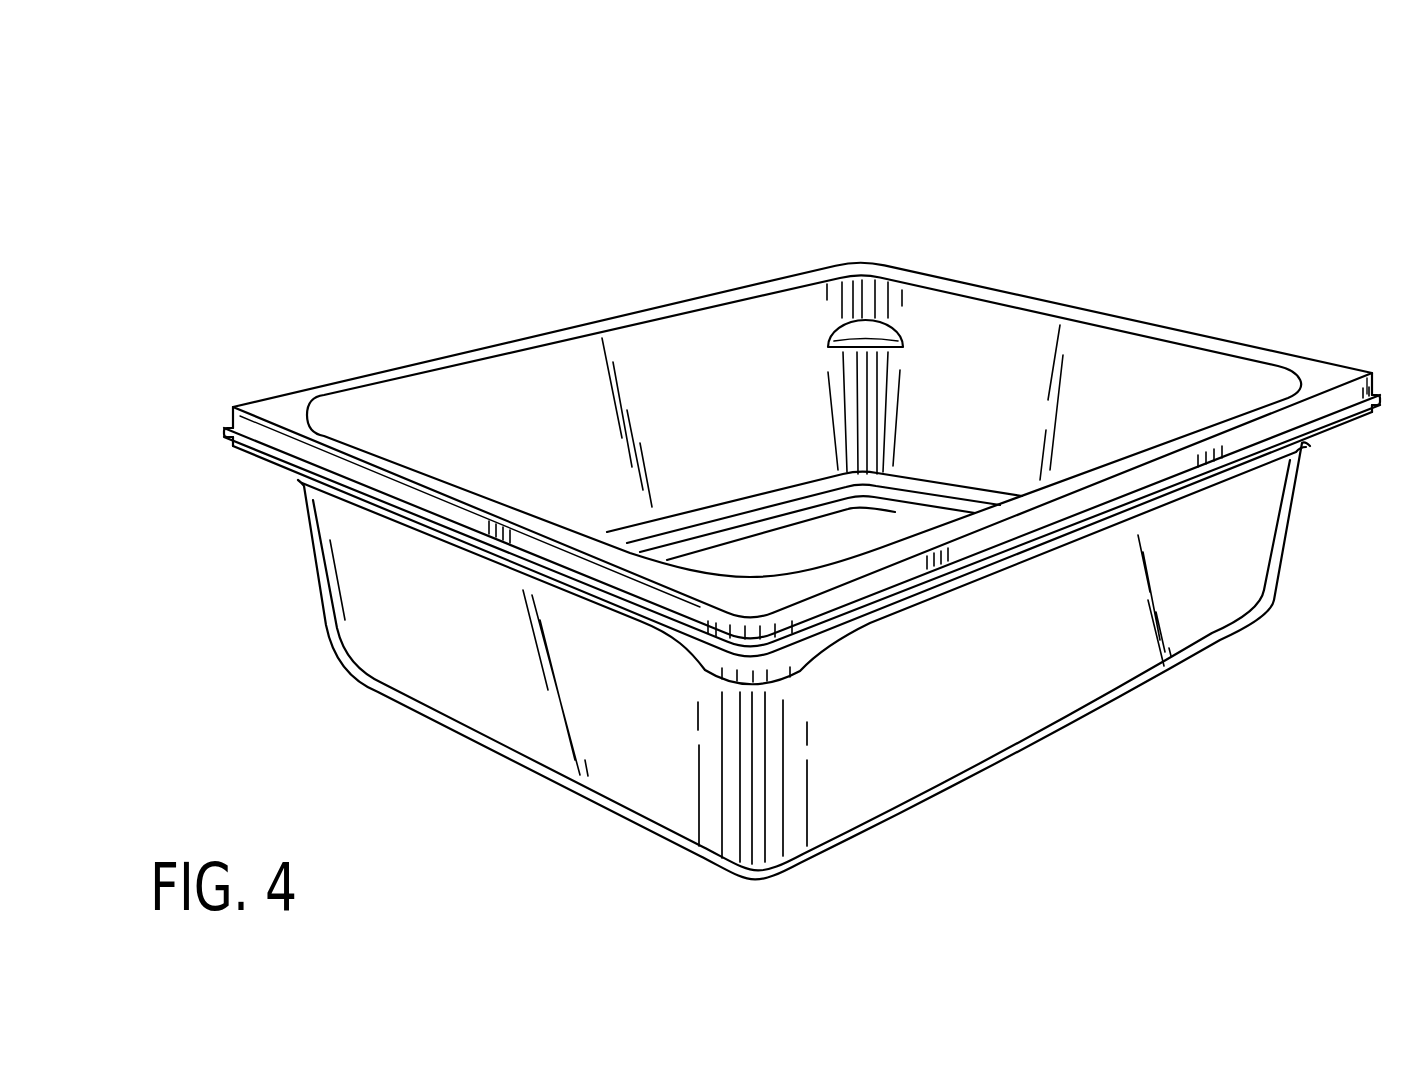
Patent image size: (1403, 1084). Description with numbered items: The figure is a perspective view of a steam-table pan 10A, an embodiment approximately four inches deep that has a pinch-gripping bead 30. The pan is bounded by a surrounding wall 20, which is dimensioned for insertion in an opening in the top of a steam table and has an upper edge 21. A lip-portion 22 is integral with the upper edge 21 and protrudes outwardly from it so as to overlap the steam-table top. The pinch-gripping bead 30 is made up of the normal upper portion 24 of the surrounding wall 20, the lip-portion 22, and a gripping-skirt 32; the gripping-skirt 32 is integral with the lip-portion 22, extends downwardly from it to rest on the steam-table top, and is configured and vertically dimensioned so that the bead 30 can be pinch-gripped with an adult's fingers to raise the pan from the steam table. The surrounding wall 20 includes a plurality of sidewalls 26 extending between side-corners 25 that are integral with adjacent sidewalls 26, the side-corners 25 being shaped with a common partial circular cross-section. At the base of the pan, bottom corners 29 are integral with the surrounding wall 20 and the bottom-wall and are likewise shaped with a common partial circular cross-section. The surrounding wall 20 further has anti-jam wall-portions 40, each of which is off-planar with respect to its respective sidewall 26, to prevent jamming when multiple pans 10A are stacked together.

The steam-table pan 10A is at (1280, 217).
The surrounding wall 20 is at (538, 740).
The upper edge 21 is at (650, 310).
The lip-portion 22 is at (383, 463).
The upper portion 24 is at (730, 338).
The side-corners 25 is at (770, 802).
The sidewalls 26 is at (1102, 353).
The bottom corners 29 is at (867, 483).
The pinch-gripping bead 30 is at (415, 490).
The gripping-skirt 32 is at (300, 450).
The anti-jam wall-portions 40 is at (870, 335).